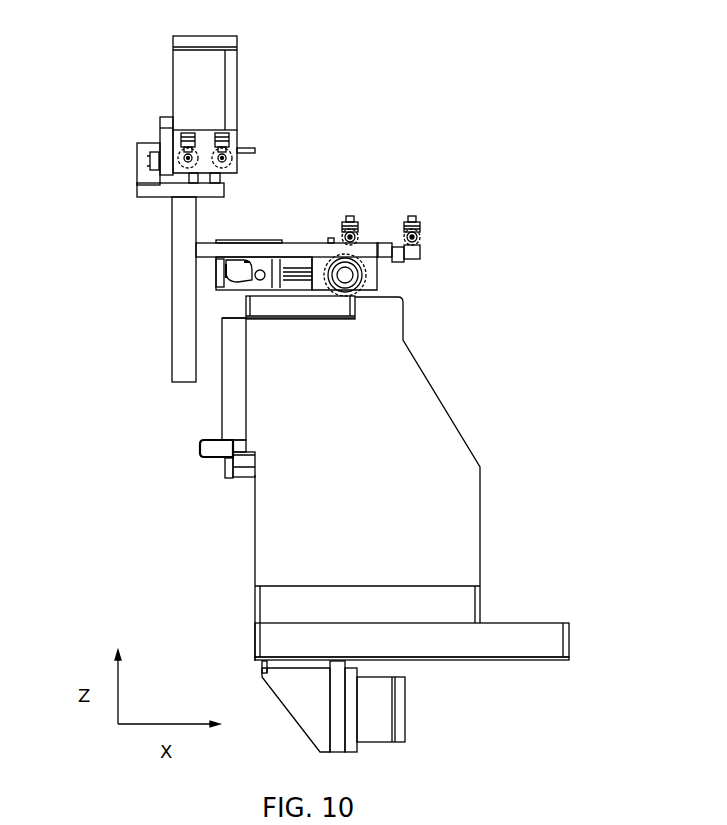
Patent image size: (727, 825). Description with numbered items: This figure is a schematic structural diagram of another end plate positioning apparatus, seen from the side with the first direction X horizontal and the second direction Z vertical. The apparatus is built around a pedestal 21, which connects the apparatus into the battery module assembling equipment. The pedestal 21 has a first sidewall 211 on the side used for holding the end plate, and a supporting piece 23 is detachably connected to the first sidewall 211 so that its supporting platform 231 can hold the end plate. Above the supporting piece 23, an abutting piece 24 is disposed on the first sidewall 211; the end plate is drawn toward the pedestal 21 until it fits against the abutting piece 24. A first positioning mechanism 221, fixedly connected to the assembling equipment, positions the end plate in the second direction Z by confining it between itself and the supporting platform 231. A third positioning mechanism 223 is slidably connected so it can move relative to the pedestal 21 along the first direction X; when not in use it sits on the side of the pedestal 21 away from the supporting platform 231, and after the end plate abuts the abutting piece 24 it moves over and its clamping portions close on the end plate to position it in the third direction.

The pedestal 21 is at (407, 498).
The first sidewall 211 is at (255, 522).
The first positioning mechanism 221 is at (352, 252).
The third positioning mechanism 223 is at (183, 194).
The supporting piece 23 is at (217, 452).
The supporting platform 231 is at (200, 450).
The abutting piece 24 is at (240, 389).